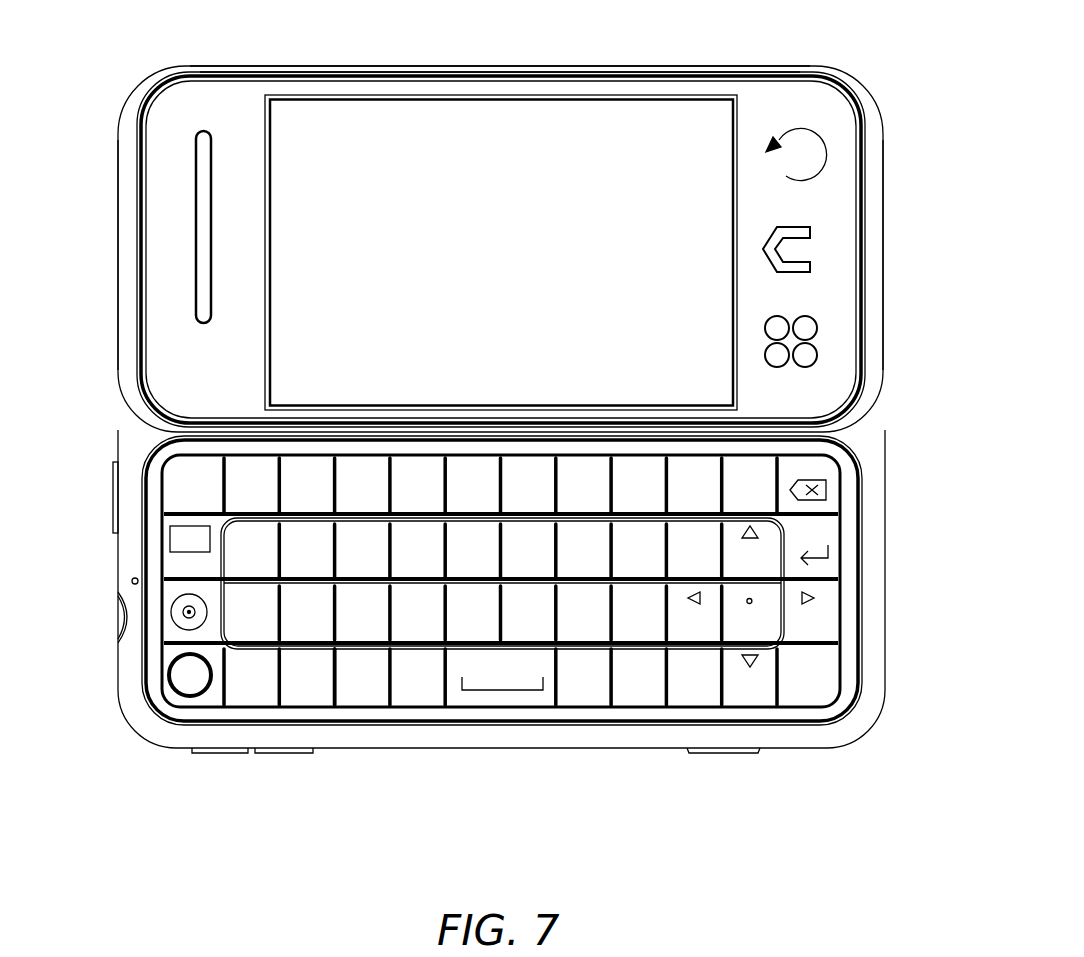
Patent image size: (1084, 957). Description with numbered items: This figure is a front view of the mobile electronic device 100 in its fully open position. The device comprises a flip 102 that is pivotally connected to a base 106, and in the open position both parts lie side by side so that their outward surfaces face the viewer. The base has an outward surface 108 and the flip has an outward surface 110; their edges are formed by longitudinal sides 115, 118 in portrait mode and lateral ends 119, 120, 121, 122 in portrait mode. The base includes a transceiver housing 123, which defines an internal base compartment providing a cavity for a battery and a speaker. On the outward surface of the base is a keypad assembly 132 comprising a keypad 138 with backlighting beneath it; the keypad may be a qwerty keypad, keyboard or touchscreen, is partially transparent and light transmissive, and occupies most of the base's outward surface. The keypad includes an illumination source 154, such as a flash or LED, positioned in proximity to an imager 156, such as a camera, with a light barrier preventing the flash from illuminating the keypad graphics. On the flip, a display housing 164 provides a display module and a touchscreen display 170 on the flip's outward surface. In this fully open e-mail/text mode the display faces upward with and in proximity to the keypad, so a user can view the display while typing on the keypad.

The mobile electronic device 100 is at (112, 402).
The flip 102 is at (166, 70).
The base 106 is at (843, 745).
The outward surface 108 is at (163, 492).
The outward surface 110 is at (160, 163).
The longitudinal side 115 is at (694, 753).
The longitudinal side 118 is at (183, 66).
The lateral end 119 is at (122, 620).
The lateral end 120 is at (118, 234).
The lateral end 121 is at (883, 203).
The lateral end 122 is at (885, 546).
The transceiver housing 123 is at (880, 707).
The keypad assembly 132 is at (128, 706).
The keypad 138 is at (321, 692).
The illumination source 154 is at (189, 612).
The imager 156 is at (187, 676).
The display housing 164 is at (270, 66).
The touchscreen display 170 is at (486, 118).